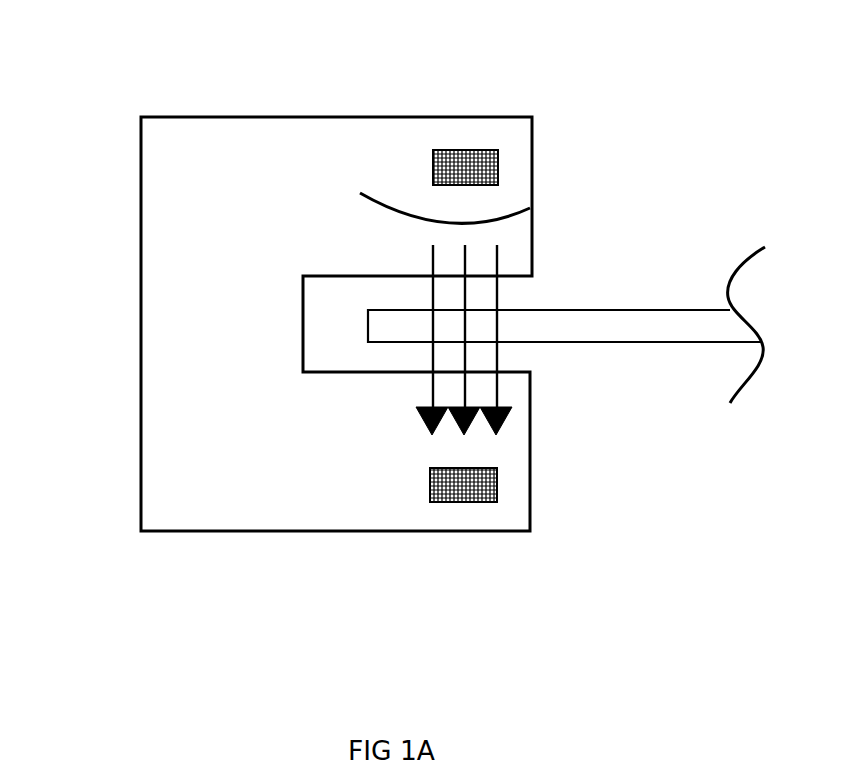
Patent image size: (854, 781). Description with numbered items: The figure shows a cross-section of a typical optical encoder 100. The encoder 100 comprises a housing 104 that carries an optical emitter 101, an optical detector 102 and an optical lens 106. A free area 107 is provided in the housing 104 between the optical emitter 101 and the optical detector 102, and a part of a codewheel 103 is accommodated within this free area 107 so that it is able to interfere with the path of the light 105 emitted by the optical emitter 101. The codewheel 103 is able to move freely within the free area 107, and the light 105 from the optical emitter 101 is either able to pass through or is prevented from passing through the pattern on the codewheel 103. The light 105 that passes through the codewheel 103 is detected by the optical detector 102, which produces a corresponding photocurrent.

The optical encoder 100 is at (672, 136).
The optical emitter 101 is at (453, 153).
The optical detector 102 is at (447, 495).
The codewheel 103 is at (606, 311).
The housing 104 is at (166, 402).
The light 105 is at (427, 291).
The optical lens 106 is at (520, 201).
The free area 107 is at (317, 338).